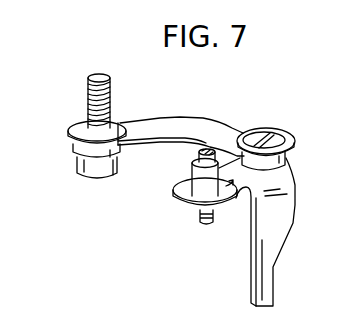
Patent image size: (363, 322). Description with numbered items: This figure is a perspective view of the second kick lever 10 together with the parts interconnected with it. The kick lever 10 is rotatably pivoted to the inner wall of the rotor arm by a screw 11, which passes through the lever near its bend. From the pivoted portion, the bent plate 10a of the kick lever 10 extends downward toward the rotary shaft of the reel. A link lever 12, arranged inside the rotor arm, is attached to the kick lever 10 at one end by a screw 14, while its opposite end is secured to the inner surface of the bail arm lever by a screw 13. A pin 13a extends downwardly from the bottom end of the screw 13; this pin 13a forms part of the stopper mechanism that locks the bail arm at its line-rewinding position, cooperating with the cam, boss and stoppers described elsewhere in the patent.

The second kick lever 10 is at (293, 173).
The bent plate 10a is at (270, 264).
The screw 11 is at (200, 222).
The link lever 12 is at (147, 130).
The screw 13 is at (78, 157).
The pin 13a is at (95, 173).
The screw 14 is at (275, 136).